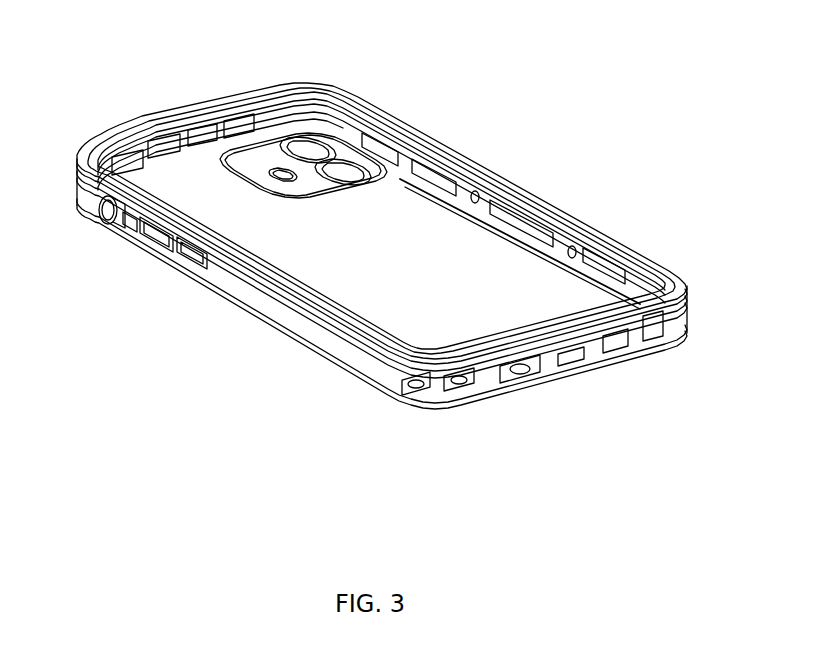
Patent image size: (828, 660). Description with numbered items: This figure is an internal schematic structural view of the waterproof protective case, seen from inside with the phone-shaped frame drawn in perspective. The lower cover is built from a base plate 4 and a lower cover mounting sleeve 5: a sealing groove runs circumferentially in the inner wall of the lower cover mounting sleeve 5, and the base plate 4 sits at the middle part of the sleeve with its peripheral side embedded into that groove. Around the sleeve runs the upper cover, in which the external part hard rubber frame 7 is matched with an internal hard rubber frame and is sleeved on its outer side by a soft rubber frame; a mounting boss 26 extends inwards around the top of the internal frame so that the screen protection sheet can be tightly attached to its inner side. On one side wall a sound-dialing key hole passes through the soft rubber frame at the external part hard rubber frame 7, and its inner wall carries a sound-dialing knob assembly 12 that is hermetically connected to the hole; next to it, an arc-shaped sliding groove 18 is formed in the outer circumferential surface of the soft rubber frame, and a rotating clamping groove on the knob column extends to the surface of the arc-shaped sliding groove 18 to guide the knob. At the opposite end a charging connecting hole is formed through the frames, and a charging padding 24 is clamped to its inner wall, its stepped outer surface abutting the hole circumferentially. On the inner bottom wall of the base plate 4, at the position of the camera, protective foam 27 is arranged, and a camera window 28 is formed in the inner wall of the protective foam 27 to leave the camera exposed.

The base plate 4 is at (340, 238).
The lower cover mounting sleeve 5 is at (330, 333).
The external part hard rubber frame 7 is at (680, 344).
The sound-dialing knob assembly 12 is at (93, 213).
The arc-shaped sliding groove 18 is at (130, 222).
The charging padding 24 is at (553, 358).
The mounting boss 26 is at (172, 128).
The protective foam 27 is at (262, 97).
The camera window 28 is at (311, 150).